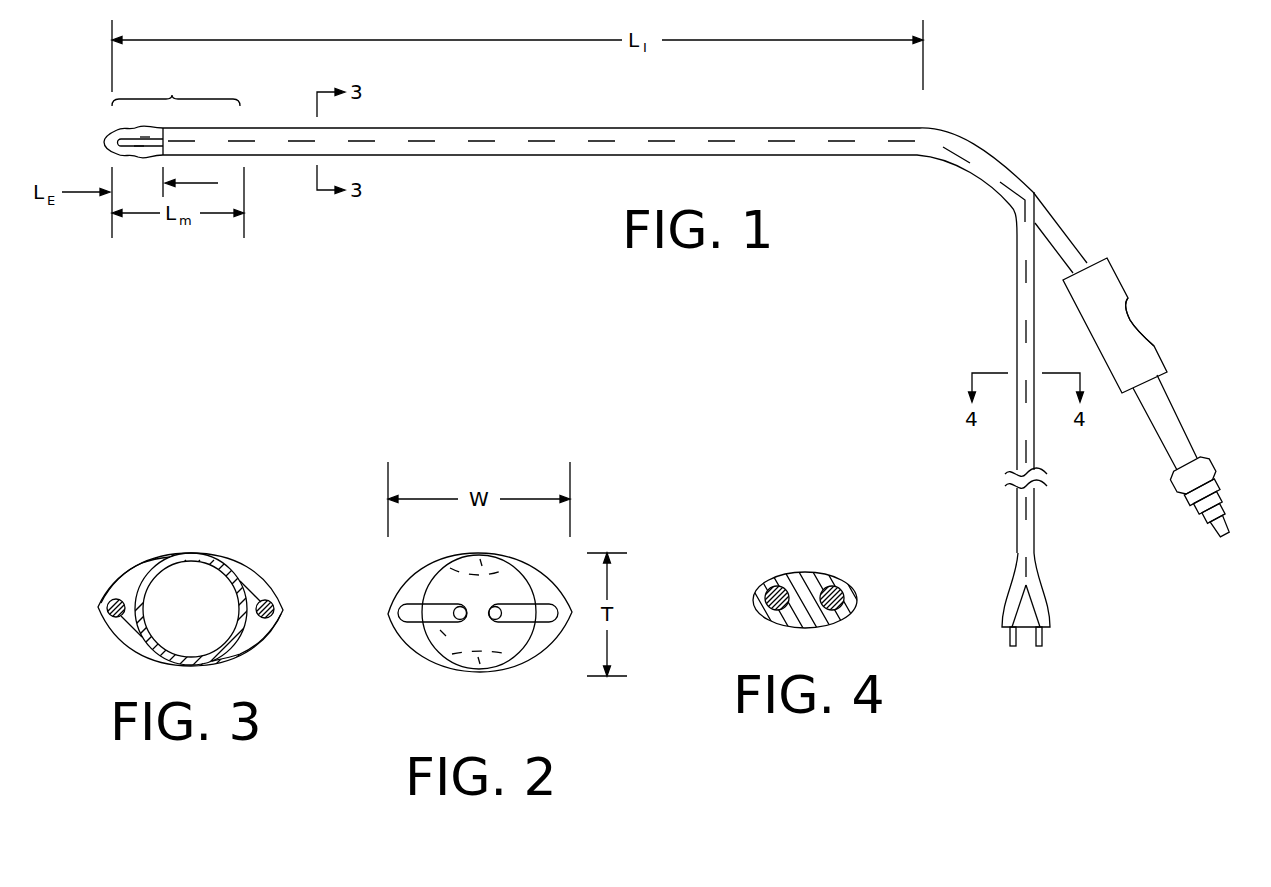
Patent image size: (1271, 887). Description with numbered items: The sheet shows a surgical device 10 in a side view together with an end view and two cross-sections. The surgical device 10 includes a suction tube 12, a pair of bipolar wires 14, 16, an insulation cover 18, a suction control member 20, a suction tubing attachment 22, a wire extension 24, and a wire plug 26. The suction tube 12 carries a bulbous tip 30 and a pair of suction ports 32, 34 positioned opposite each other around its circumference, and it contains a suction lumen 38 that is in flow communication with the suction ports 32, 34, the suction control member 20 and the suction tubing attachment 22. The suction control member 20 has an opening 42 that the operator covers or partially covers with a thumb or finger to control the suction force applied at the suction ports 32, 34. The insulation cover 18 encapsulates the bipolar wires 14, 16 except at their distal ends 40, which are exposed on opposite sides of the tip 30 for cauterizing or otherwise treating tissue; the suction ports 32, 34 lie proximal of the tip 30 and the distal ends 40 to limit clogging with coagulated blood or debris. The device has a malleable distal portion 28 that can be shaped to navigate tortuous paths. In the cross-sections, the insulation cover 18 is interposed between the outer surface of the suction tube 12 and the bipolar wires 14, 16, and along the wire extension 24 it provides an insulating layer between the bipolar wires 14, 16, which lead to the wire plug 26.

In FIG. 1, the surgical device 10 is at (1054, 78).
In FIG. 3, the surgical device 10 is at (214, 506).
In FIG. 2, the surgical device 10 is at (613, 503).
In FIG. 1, the suction tube 12 is at (1062, 209).
In FIG. 3, the suction tube 12 is at (174, 546).
In FIG. 2, the suction tube 12 is at (523, 565).
In FIG. 1, the bipolar wire 14 is at (1012, 621).
In FIG. 3, the bipolar wire 14 is at (110, 600).
In FIG. 2, the bipolar wire 14 is at (418, 612).
In FIG. 4, the bipolar wire 14 is at (785, 587).
In FIG. 1, the bipolar wire 16 is at (1036, 612).
In FIG. 3, the bipolar wire 16 is at (270, 603).
In FIG. 2, the bipolar wire 16 is at (548, 618).
In FIG. 4, the bipolar wire 16 is at (841, 587).
In FIG. 1, the insulation cover 18 is at (748, 127).
In FIG. 3, the insulation cover 18 is at (247, 566).
In FIG. 2, the insulation cover 18 is at (418, 640).
In FIG. 1, the suction control member 20 is at (1150, 348).
In FIG. 1, the suction tubing attachment 22 is at (1215, 462).
In FIG. 1, the wire extension 24 is at (1018, 328).
In FIG. 4, the wire extension 24 is at (812, 576).
In FIG. 1, the wire plug 26 is at (1008, 597).
In FIG. 1, the malleable distal portion 28 is at (176, 86).
In FIG. 1, the tip 30 is at (100, 143).
In FIG. 2, the tip 30 is at (444, 634).
In FIG. 1, the suction port 32 is at (137, 138).
In FIG. 2, the suction port 32 is at (483, 547).
In FIG. 1, the suction port 34 is at (136, 147).
In FIG. 2, the suction port 34 is at (472, 677).
In FIG. 3, the suction lumen 38 is at (197, 600).
In FIG. 1, the distal ends 40 is at (105, 132).
In FIG. 2, the distal ends 40 is at (458, 620).
In FIG. 1, the opening 42 is at (1137, 320).